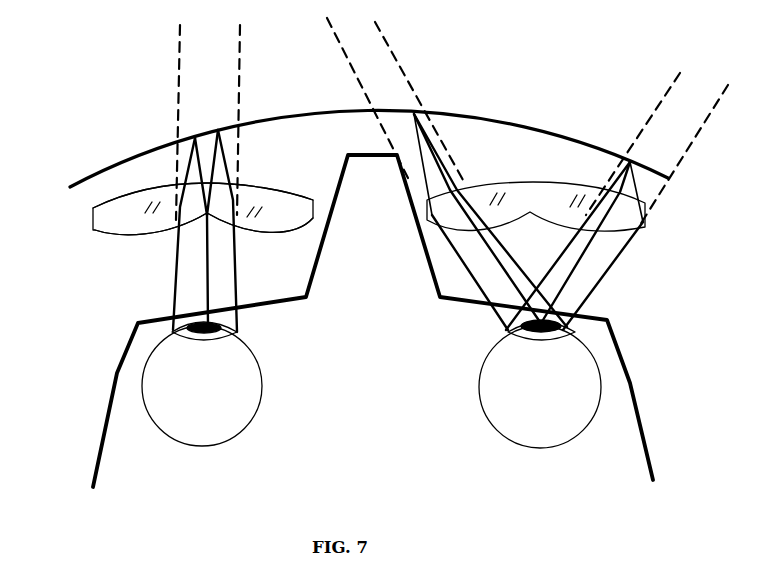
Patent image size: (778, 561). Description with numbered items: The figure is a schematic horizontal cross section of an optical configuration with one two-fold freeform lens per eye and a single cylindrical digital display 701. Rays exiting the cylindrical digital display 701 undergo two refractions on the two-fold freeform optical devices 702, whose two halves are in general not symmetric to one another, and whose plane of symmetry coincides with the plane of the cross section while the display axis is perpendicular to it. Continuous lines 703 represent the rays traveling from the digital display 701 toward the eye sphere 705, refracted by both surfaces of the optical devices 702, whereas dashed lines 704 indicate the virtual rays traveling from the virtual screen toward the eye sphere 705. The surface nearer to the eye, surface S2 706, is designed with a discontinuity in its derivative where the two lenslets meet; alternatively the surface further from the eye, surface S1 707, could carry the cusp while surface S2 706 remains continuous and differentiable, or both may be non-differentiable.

The cylindrical digital display 701 is at (115, 163).
The 2-fold freeform optical device 702 is at (97, 218).
The continuous lines (real rays) 703 is at (227, 167).
The dashed lines (virtual rays) 704 is at (180, 62).
The eye sphere 705 is at (233, 437).
The surface S2 nearer to the eye 706 is at (127, 233).
The surface S1 further from the eye 707 is at (288, 197).